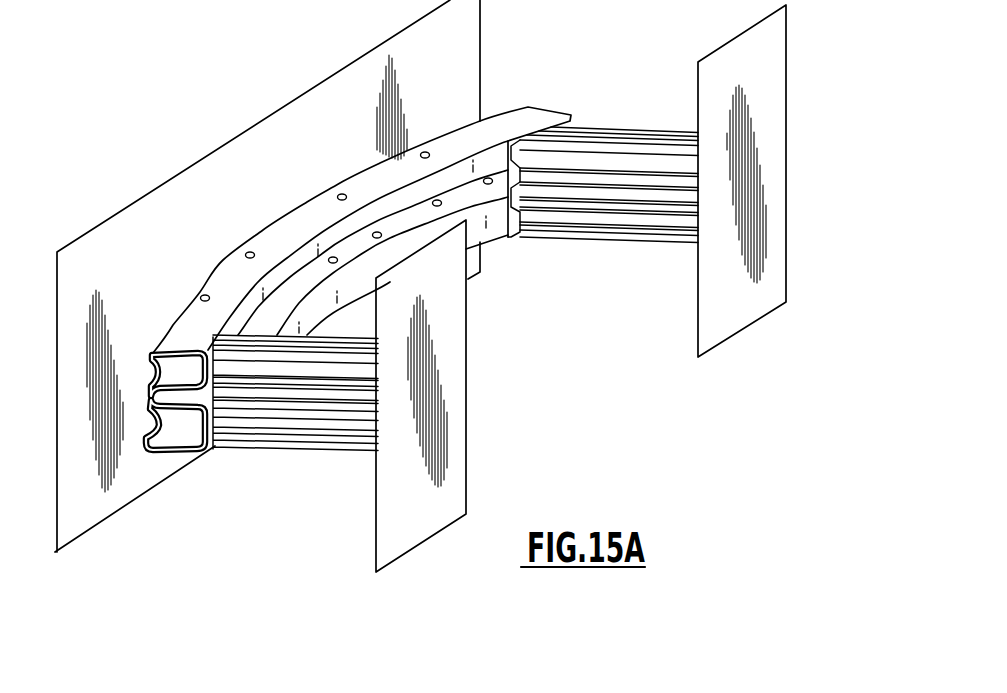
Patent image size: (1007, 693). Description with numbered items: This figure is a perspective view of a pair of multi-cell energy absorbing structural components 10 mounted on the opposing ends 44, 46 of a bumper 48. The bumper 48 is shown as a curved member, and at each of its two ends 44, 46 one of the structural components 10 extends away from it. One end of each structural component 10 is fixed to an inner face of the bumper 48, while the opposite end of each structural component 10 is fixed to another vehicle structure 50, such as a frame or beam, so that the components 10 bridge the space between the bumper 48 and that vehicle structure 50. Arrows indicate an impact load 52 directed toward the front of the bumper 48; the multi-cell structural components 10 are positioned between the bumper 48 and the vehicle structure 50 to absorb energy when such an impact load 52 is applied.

The multi-cell energy absorbing structural component 10 is at (301, 440).
The end of bumper 44 is at (174, 438).
The end of bumper 46 is at (528, 107).
The bumper 48 is at (378, 258).
The vehicle structure 50 is at (457, 494).
The impact load 52 is at (220, 150).